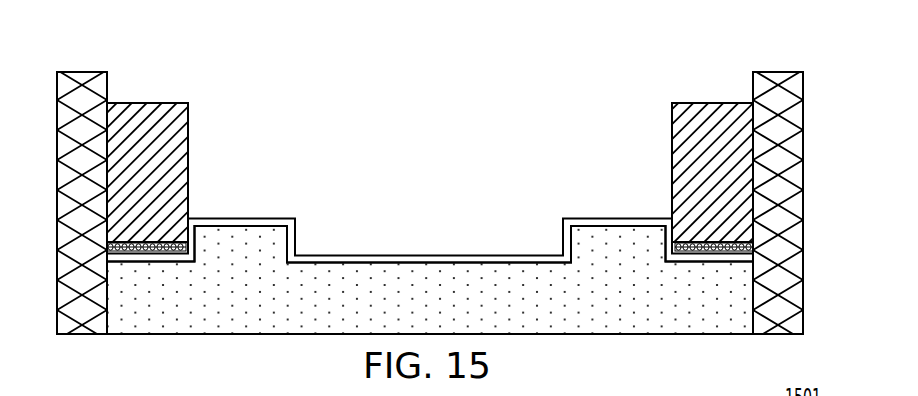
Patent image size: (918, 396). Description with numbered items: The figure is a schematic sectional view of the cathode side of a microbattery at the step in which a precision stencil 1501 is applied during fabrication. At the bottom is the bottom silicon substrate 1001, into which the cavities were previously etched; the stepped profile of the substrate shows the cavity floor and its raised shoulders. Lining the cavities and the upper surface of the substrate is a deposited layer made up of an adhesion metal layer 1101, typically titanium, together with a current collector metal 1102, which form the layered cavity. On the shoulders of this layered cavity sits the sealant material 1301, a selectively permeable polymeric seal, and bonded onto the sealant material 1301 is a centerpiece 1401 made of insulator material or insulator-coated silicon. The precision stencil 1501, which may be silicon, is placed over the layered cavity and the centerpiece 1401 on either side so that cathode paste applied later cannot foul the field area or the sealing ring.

The bottom silicon substrate 1001 is at (447, 305).
The adhesion metal layer 1101 is at (562, 240).
The current collector metal 1102 is at (229, 219).
The sealant material 1301 is at (703, 243).
The centerpiece 1401 is at (713, 112).
The precision stencil 1501 is at (777, 82).